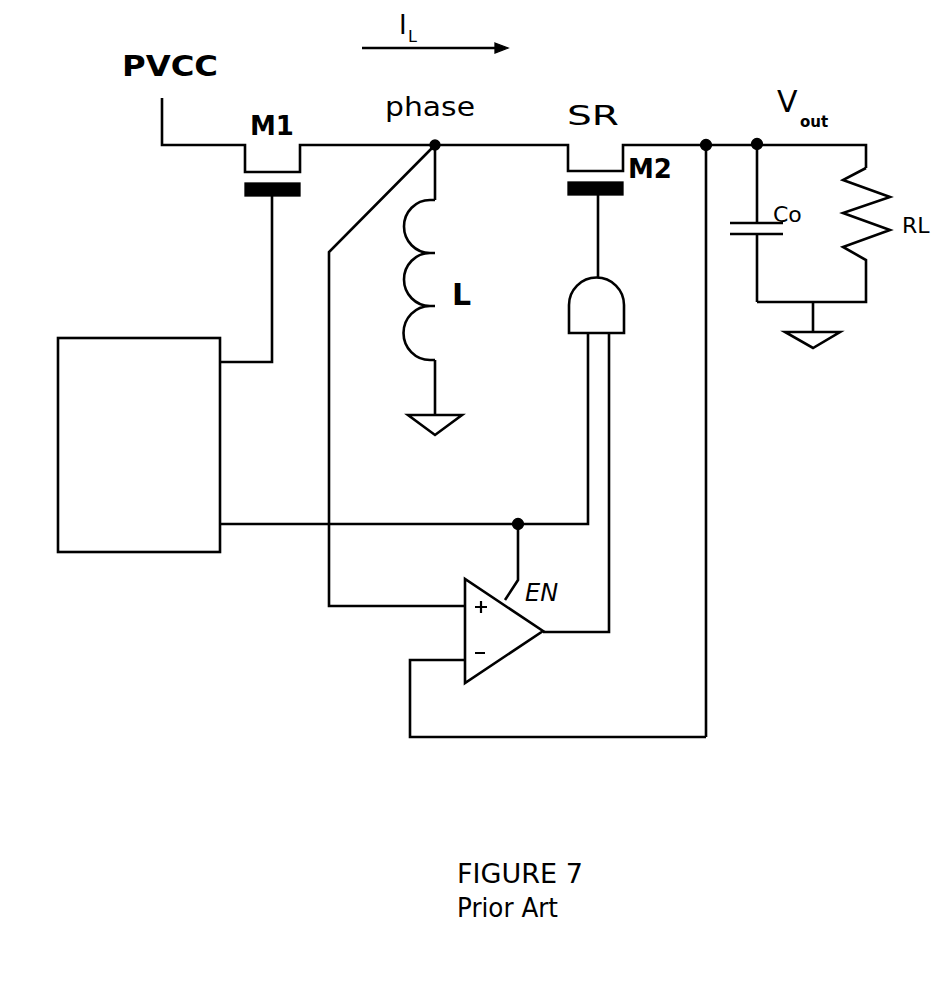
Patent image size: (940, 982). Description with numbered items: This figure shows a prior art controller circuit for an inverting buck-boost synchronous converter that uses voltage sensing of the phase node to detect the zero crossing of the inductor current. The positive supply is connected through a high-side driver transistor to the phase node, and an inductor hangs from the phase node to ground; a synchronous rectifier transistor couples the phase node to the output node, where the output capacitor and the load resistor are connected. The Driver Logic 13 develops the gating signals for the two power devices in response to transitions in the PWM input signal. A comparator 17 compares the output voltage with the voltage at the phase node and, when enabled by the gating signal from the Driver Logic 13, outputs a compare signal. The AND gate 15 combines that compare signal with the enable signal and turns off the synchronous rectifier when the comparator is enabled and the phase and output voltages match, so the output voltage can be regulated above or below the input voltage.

The driver logic 13 is at (123, 547).
The AND gate 15 is at (603, 297).
The comparator 17 is at (512, 632).